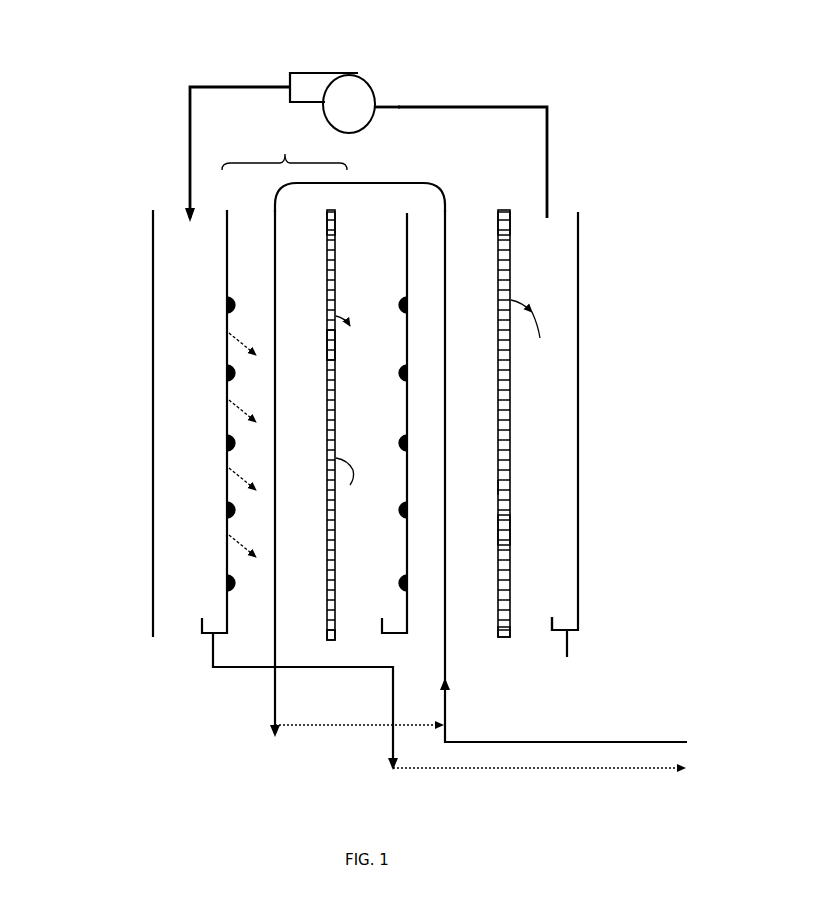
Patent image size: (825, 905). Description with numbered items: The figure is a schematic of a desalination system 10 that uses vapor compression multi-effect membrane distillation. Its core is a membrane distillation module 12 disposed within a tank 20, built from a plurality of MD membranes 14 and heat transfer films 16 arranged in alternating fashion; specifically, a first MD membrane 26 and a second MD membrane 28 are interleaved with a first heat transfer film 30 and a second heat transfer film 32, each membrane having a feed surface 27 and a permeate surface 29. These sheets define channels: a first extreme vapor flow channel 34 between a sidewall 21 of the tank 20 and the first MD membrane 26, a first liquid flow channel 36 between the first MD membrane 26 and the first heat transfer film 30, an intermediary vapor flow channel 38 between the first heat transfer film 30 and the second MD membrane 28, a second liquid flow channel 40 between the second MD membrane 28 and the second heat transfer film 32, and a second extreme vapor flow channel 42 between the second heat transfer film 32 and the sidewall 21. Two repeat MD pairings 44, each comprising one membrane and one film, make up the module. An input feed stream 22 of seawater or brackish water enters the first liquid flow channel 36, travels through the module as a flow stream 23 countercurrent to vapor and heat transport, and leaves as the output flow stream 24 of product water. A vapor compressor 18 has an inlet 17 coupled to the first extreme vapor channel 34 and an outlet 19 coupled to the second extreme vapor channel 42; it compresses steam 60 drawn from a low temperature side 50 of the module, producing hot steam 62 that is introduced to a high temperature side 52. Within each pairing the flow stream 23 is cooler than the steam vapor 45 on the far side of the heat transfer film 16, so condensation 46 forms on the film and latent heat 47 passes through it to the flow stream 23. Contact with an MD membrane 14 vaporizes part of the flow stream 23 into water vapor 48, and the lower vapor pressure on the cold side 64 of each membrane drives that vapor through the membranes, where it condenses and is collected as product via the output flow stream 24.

The desalination system 10 is at (742, 90).
The membrane distillation module 12 is at (560, 394).
The MD membrane 14 is at (331, 645).
The heat transfer film 16 is at (233, 598).
The inlet 17 is at (380, 97).
The vapor compressor 18 is at (361, 73).
The outlet 19 is at (285, 86).
The tank 20 is at (153, 505).
The sidewall 21 is at (578, 584).
The input feed stream 22 is at (600, 740).
The flow stream 23 is at (275, 519).
The output flow stream 24 is at (327, 432).
The first MD membrane 26 is at (504, 210).
The feed surface 27 is at (498, 487).
The second MD membrane 28 is at (362, 184).
The permeate surface 29 is at (336, 348).
The first heat transfer film 30 is at (407, 258).
The second heat transfer film 32 is at (227, 262).
The first extreme vapor flow channel 34 is at (542, 431).
The first liquid flow channel 36 is at (469, 256).
The intermediary vapor flow channel 38 is at (369, 406).
The second liquid flow channel 40 is at (299, 336).
The second extreme vapor flow channel 42 is at (172, 425).
The repeat MD pairing 44 is at (284, 149).
The steam vapor 45 is at (578, 286).
The condensation 46 is at (223, 516).
The latent heat 47 is at (242, 468).
The water vapor 48 is at (442, 416).
The low temperature side 50 is at (715, 410).
The high temperature side 52 is at (126, 378).
The steam 60 is at (547, 152).
The hot steam 62 is at (190, 135).
The cold side 64 is at (336, 226).